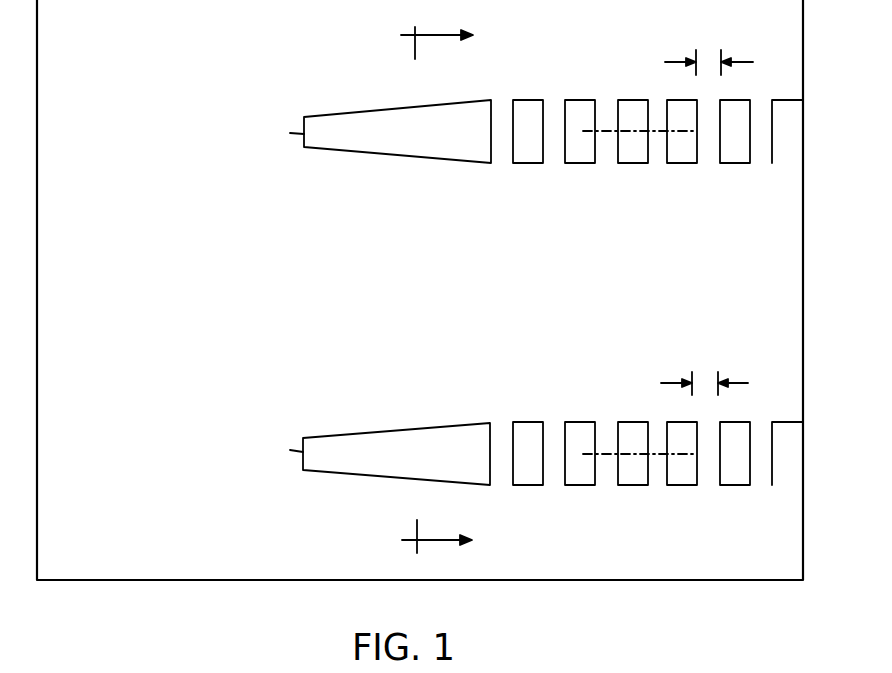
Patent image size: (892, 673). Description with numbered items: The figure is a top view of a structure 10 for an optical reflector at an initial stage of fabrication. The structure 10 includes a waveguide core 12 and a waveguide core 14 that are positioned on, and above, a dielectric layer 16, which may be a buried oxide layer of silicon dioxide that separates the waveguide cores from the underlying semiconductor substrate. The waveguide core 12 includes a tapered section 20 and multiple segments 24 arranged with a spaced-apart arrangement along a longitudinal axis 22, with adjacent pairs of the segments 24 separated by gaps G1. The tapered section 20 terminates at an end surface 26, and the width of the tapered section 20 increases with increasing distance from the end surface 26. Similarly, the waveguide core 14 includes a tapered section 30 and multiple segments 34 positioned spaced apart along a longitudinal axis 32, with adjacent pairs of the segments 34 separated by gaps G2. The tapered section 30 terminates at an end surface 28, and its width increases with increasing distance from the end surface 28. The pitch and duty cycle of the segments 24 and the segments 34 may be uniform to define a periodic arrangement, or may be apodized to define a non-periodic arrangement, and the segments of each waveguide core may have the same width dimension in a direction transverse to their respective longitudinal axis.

The structure 10 is at (143, 63).
The waveguide core 12 is at (560, 57).
The waveguide core 14 is at (560, 375).
The dielectric layer 16 is at (101, 534).
The tapered section 20 is at (394, 128).
The longitudinal axis 22 is at (620, 133).
The segments 24 is at (523, 141).
The end surface 26 is at (290, 133).
The end surface 28 is at (290, 450).
The tapered section 30 is at (423, 452).
The longitudinal axis 32 is at (620, 457).
The segments 34 is at (523, 466).
The gaps G1 is at (709, 48).
The gaps G2 is at (704, 369).